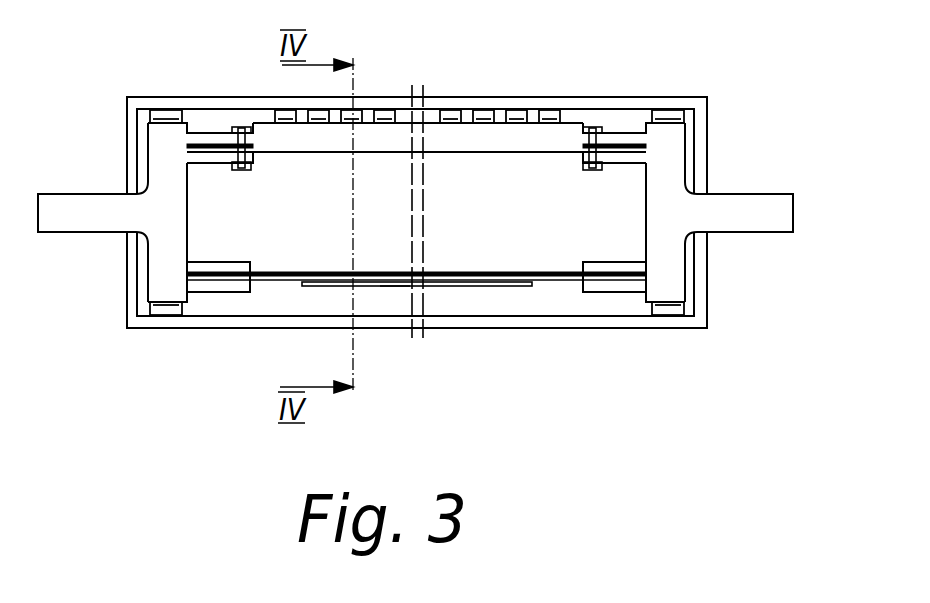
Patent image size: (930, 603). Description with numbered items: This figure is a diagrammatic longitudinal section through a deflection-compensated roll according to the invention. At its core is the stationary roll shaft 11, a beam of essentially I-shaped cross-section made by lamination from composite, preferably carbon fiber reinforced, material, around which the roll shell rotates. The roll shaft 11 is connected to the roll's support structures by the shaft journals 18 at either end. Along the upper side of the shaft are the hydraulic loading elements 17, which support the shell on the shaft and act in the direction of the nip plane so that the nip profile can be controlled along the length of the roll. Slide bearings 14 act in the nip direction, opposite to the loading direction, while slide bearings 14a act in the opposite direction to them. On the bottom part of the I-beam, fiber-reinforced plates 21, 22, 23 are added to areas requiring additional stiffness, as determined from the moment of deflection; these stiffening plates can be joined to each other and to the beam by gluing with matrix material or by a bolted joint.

The roll shaft 11 is at (373, 160).
The slide bearings 14 is at (167, 110).
The slide bearings 14a is at (156, 317).
The hydraulic loading elements 17 is at (283, 110).
The shaft journals 18 is at (88, 200).
The fiber-reinforced plate 21 is at (278, 282).
The fiber-reinforced plate 22 is at (323, 287).
The fiber-reinforced plate 23 is at (393, 287).